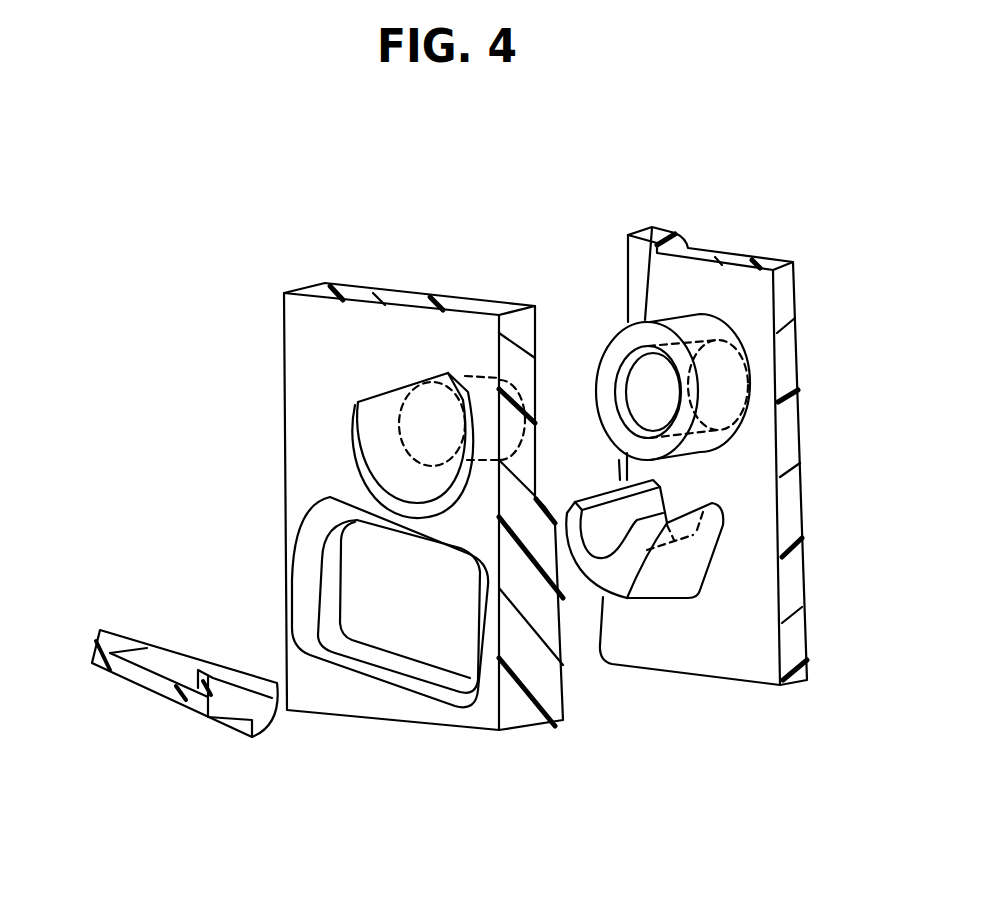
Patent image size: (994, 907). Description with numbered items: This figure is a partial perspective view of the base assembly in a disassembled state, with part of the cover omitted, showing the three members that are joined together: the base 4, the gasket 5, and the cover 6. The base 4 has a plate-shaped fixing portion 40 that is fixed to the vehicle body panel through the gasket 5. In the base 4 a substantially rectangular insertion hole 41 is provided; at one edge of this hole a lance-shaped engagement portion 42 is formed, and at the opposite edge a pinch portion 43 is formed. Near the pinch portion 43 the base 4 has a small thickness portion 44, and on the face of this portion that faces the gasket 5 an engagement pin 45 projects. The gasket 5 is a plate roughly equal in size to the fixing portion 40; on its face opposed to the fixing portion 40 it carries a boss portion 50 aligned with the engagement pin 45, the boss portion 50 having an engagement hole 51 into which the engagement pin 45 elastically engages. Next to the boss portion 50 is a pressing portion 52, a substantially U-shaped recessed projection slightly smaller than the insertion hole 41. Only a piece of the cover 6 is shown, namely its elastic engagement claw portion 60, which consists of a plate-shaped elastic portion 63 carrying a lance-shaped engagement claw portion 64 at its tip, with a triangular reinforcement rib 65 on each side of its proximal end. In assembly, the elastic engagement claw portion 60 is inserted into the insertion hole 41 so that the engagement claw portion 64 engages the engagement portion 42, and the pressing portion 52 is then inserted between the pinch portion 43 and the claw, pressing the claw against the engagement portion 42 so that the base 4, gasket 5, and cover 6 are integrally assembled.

The base 4 is at (363, 511).
The fixing portion 40 is at (297, 380).
The insertion hole 41 is at (343, 541).
The engagement portion 42 is at (394, 648).
The pinch portion 43 is at (447, 557).
The small thickness portion 44 is at (377, 422).
The engagement pin 45 is at (470, 375).
The gasket 5 is at (680, 449).
The boss portion 50 is at (697, 325).
The engagement hole 51 is at (630, 378).
The pressing portion 52 is at (665, 577).
The cover 6 is at (180, 707).
The elastic engagement claw portion 60 is at (175, 791).
The elastic portion 63 is at (158, 687).
The engagement claw portion 64 is at (213, 768).
The reinforcement rib 65 is at (130, 643).